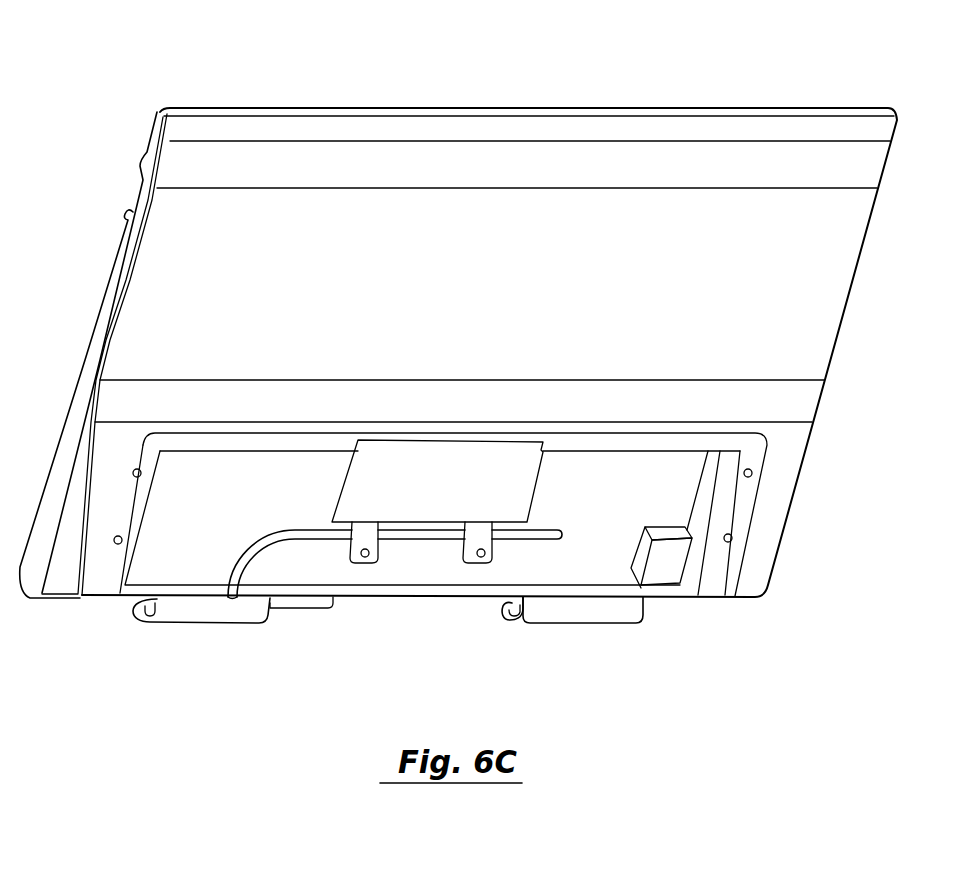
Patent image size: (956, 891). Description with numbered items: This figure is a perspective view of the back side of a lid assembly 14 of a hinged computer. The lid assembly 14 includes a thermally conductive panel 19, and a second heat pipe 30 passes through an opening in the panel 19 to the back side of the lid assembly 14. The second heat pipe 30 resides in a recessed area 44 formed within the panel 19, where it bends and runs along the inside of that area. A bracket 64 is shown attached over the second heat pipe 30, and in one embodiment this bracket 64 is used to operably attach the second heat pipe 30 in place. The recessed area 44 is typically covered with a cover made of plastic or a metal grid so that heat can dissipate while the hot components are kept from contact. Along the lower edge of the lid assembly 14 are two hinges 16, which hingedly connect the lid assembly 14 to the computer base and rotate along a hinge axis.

The lid assembly 14 is at (328, 108).
The thermally conductive panel 19 is at (238, 285).
The second heat pipe 30 is at (260, 547).
The bracket 64 is at (463, 493).
The recessed area 44 is at (672, 487).
The hinges 16 is at (595, 612).